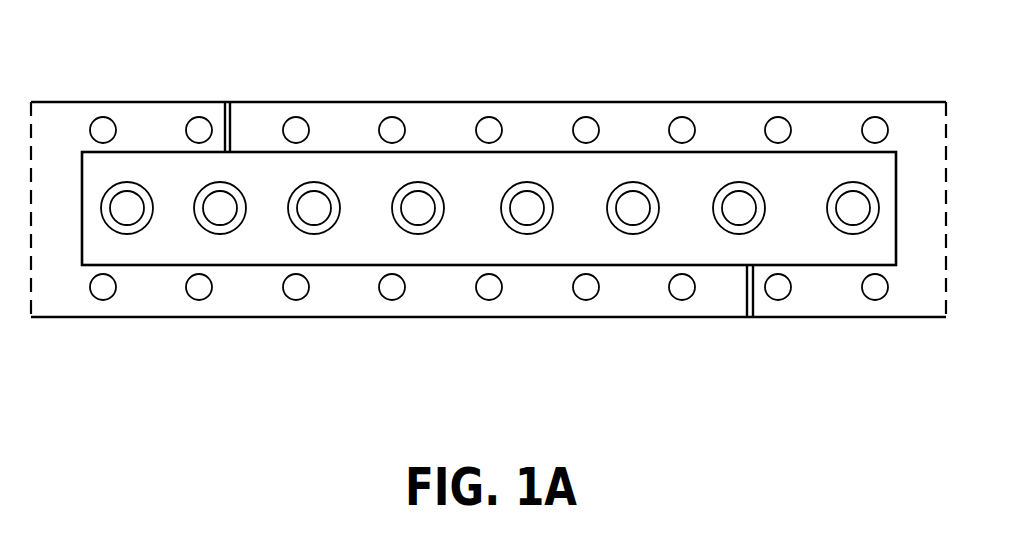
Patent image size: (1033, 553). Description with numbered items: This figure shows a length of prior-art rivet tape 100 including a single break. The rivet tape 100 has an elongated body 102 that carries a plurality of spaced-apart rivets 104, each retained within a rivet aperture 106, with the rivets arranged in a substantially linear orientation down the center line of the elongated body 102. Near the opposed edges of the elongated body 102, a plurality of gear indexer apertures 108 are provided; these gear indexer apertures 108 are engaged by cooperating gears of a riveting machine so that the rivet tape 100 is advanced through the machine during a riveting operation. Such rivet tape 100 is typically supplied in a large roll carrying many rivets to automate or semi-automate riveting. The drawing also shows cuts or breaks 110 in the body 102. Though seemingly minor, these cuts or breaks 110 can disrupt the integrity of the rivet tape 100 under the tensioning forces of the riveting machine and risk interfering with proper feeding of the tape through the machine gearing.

The rivet tape 100 is at (779, 78).
The elongated body 102 is at (377, 101).
The rivets 104 is at (128, 182).
The rivet apertures 106 is at (127, 226).
The gear indexer apertures 108 is at (199, 300).
The cuts or breaks 110 is at (233, 103).